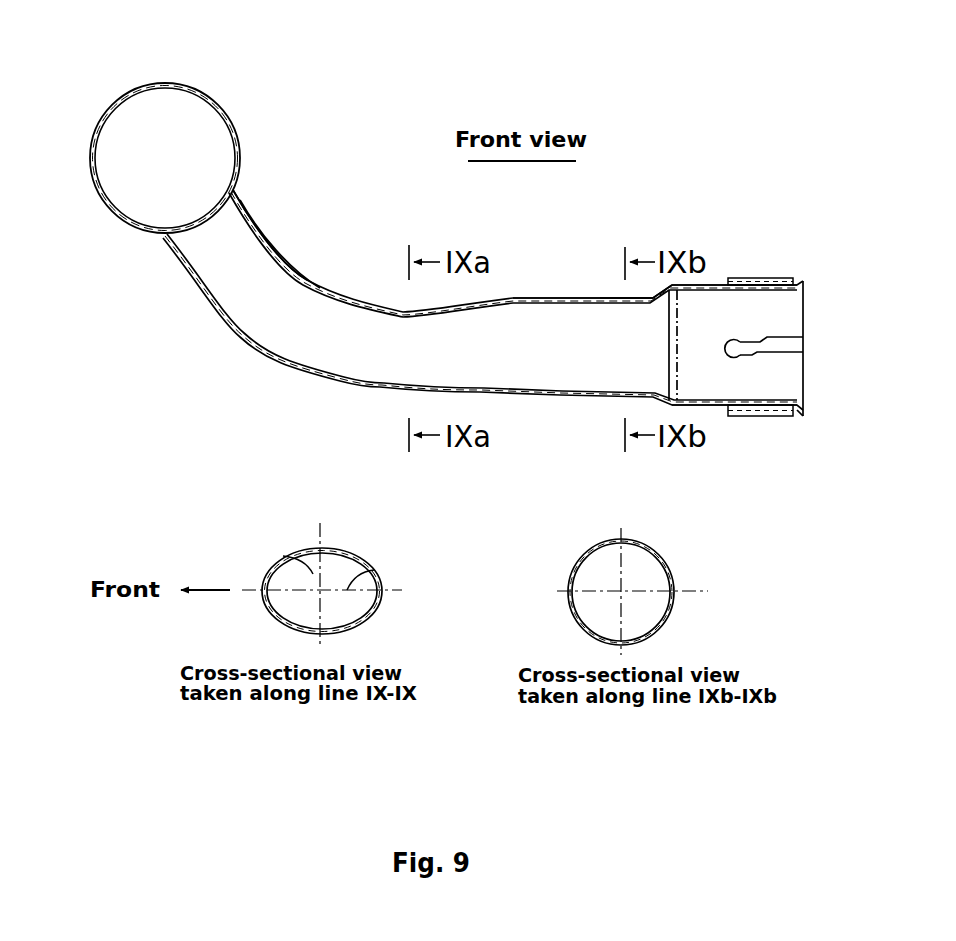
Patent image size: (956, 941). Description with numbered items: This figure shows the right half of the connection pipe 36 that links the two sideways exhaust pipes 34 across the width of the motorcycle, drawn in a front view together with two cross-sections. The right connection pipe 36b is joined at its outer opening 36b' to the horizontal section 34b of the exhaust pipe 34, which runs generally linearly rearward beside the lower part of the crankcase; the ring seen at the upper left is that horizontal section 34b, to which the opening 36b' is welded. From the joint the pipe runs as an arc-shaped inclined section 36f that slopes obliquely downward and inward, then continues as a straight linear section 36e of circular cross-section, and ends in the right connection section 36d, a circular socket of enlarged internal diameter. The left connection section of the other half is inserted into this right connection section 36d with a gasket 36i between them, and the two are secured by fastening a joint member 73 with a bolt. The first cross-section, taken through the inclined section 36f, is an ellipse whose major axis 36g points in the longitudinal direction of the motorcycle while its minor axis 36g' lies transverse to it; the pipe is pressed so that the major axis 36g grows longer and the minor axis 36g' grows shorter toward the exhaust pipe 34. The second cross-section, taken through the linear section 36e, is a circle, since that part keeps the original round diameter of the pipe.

The sideways exhaust pipe 34 is at (191, 136).
The horizontal section 34b is at (112, 102).
The connection pipe 36 is at (573, 292).
The right connection pipe 36b is at (582, 243).
The opening 36b' is at (291, 212).
The right connection section 36d is at (707, 284).
The linear section 36e is at (606, 298).
The inclined section 36f is at (265, 238).
The major axis 36g is at (412, 568).
The minor axis 36g' is at (270, 535).
The gasket 36i is at (682, 401).
The joint member 73 is at (763, 278).